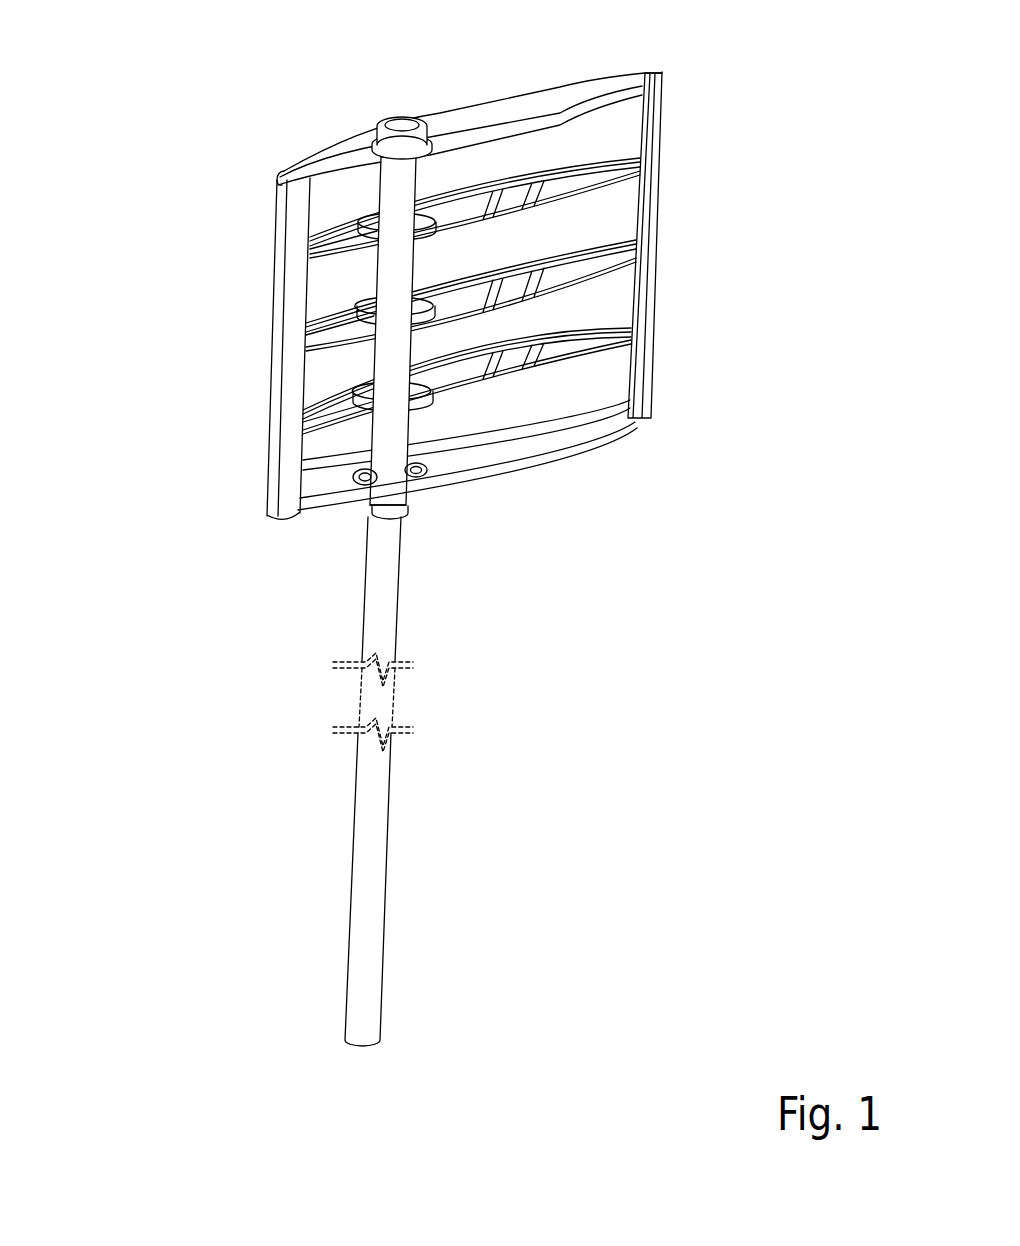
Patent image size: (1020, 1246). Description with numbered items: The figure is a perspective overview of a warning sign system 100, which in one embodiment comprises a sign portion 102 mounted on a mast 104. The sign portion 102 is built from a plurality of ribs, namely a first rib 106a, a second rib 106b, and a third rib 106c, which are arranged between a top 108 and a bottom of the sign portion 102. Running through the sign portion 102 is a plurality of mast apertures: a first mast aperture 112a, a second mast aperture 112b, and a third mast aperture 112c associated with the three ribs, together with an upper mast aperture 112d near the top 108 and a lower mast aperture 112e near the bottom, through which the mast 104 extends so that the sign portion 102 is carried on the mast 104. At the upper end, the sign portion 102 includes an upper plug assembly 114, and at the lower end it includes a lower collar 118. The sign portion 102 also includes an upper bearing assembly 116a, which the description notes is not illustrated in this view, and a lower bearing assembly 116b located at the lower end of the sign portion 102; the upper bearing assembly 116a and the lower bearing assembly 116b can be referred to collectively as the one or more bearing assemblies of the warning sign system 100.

The warning sign system 100 is at (183, 670).
The sign portion 102 is at (320, 153).
The mast 104 is at (352, 890).
The first rib 106a is at (643, 177).
The second rib 106b is at (613, 263).
The third rib 106c is at (607, 350).
The top 108 is at (560, 93).
The first mast aperture 112a is at (375, 242).
The second mast aperture 112b is at (372, 304).
The third mast aperture 112c is at (368, 400).
The upper mast aperture 112d is at (376, 138).
The lower mast aperture 112e is at (372, 519).
The upper plug assembly 114 is at (394, 130).
The upper bearing assembly 116a is at (436, 178).
The lower bearing assembly 116b is at (351, 493).
The lower collar 118 is at (397, 513).